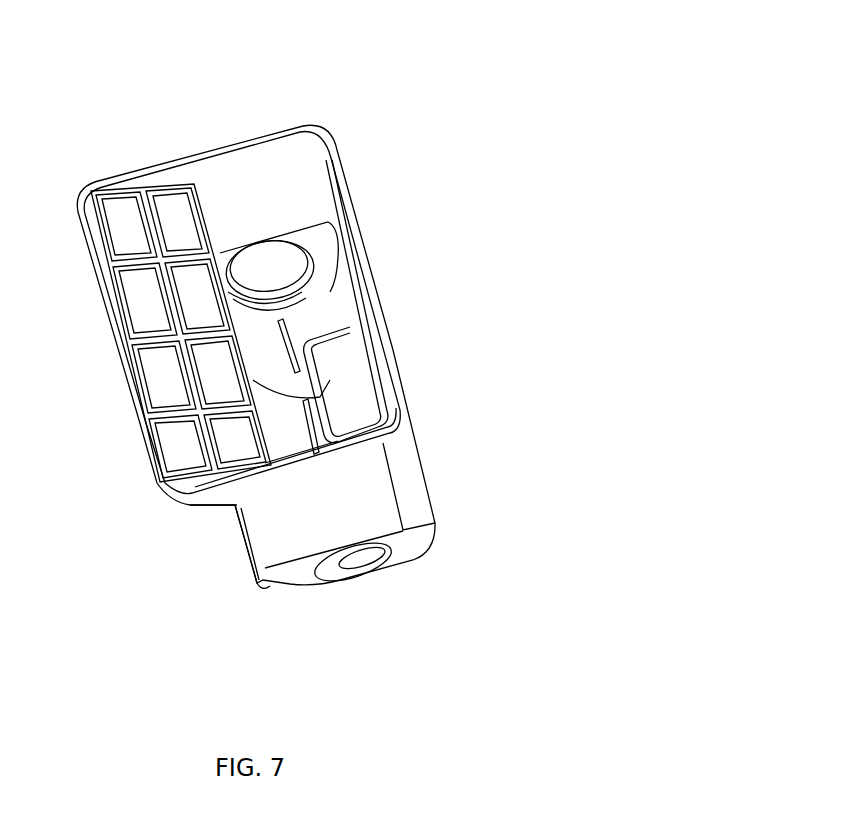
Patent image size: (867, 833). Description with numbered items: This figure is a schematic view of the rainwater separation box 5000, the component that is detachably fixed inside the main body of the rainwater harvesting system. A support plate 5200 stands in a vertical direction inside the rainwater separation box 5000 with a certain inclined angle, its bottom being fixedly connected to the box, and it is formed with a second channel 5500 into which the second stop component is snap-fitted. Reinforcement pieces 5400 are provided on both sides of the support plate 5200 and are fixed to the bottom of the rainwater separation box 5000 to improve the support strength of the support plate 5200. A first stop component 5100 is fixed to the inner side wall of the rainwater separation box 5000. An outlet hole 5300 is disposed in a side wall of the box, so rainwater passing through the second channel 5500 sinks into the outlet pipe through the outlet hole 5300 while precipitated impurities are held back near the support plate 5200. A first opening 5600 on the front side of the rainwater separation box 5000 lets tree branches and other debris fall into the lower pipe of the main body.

The rainwater separation box 5000 is at (245, 190).
The first stop component 5100 is at (143, 313).
The support plate 5200 is at (314, 222).
The outlet hole 5300 is at (350, 560).
The reinforcement piece 5400 is at (374, 312).
The second channel 5500 is at (350, 403).
The first opening 5600 is at (235, 530).